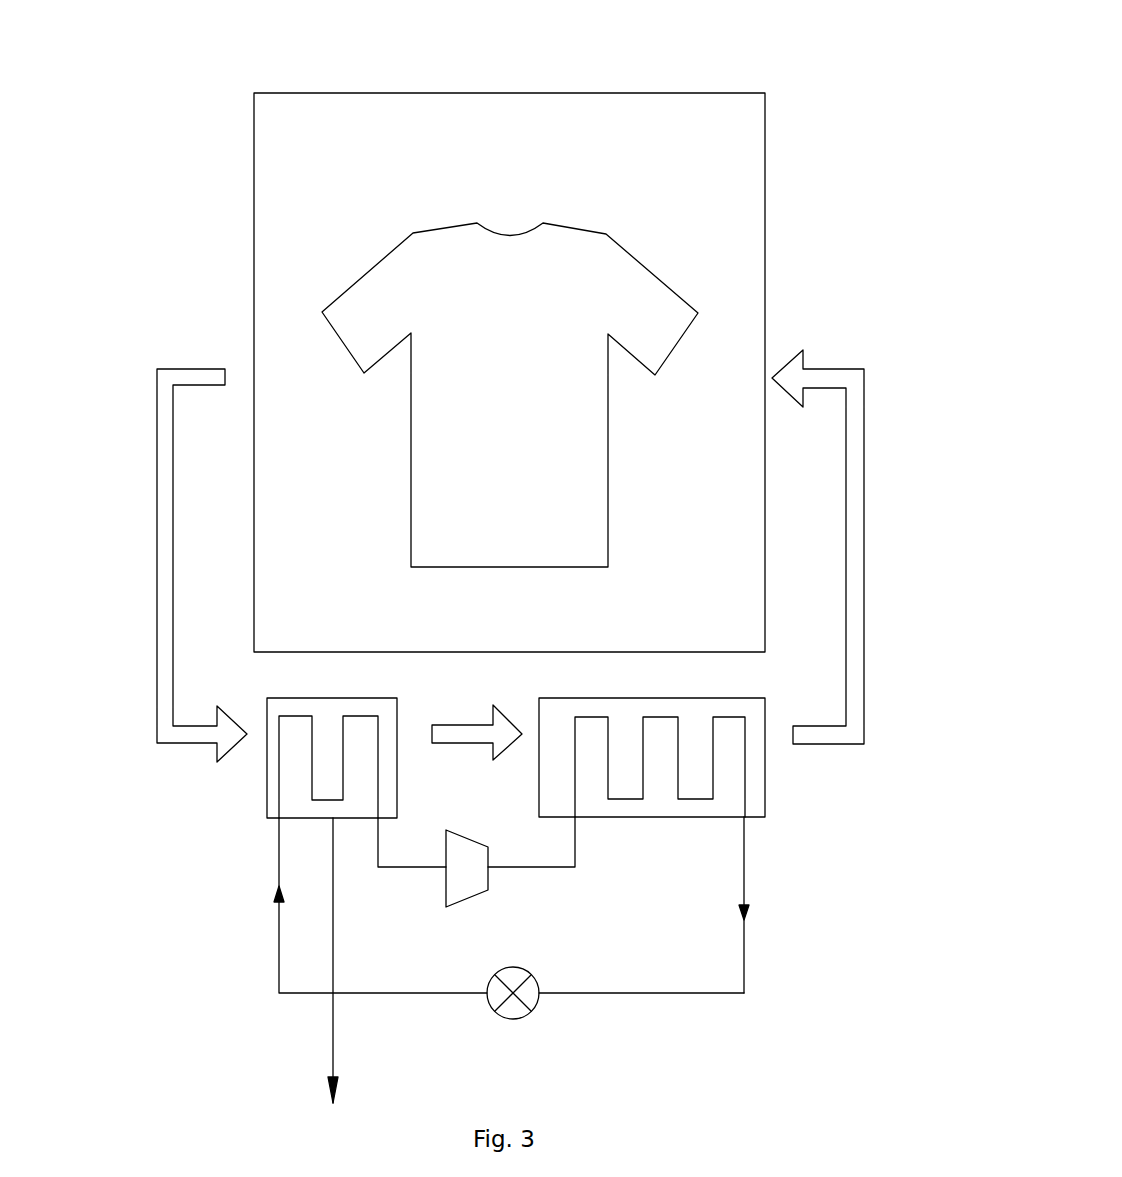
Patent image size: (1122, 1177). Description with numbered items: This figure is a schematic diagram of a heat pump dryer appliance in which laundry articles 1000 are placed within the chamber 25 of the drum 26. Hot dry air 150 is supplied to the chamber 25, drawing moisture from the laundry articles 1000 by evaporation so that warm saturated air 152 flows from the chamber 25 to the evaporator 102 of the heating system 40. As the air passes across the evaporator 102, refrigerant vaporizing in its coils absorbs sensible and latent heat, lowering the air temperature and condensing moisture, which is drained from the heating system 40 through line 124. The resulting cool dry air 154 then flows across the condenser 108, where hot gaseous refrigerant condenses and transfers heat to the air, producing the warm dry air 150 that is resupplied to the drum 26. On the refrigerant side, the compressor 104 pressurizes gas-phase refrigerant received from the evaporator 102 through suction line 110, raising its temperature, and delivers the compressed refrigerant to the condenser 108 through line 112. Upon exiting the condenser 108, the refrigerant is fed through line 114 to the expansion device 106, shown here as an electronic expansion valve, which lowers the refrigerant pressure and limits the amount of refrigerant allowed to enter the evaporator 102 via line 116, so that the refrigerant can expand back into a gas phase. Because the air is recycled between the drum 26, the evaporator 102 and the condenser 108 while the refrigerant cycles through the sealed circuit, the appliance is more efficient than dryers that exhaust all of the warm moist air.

The drum 26 is at (715, 93).
The chamber 25 is at (656, 154).
The laundry articles 1000 is at (410, 275).
The warm saturated air 152 is at (165, 514).
The hot dry air 150 is at (854, 562).
The cool dry air 154 is at (475, 735).
The evaporator 102 is at (266, 800).
The condenser 108 is at (752, 793).
The compressor 104 is at (468, 897).
The suction line 110 is at (412, 867).
The line 112 is at (575, 842).
The line 114 is at (744, 972).
The expansion device 106 is at (522, 1016).
The line 116 is at (382, 993).
The line 124 is at (333, 1047).
The heating system 40 is at (712, 1050).